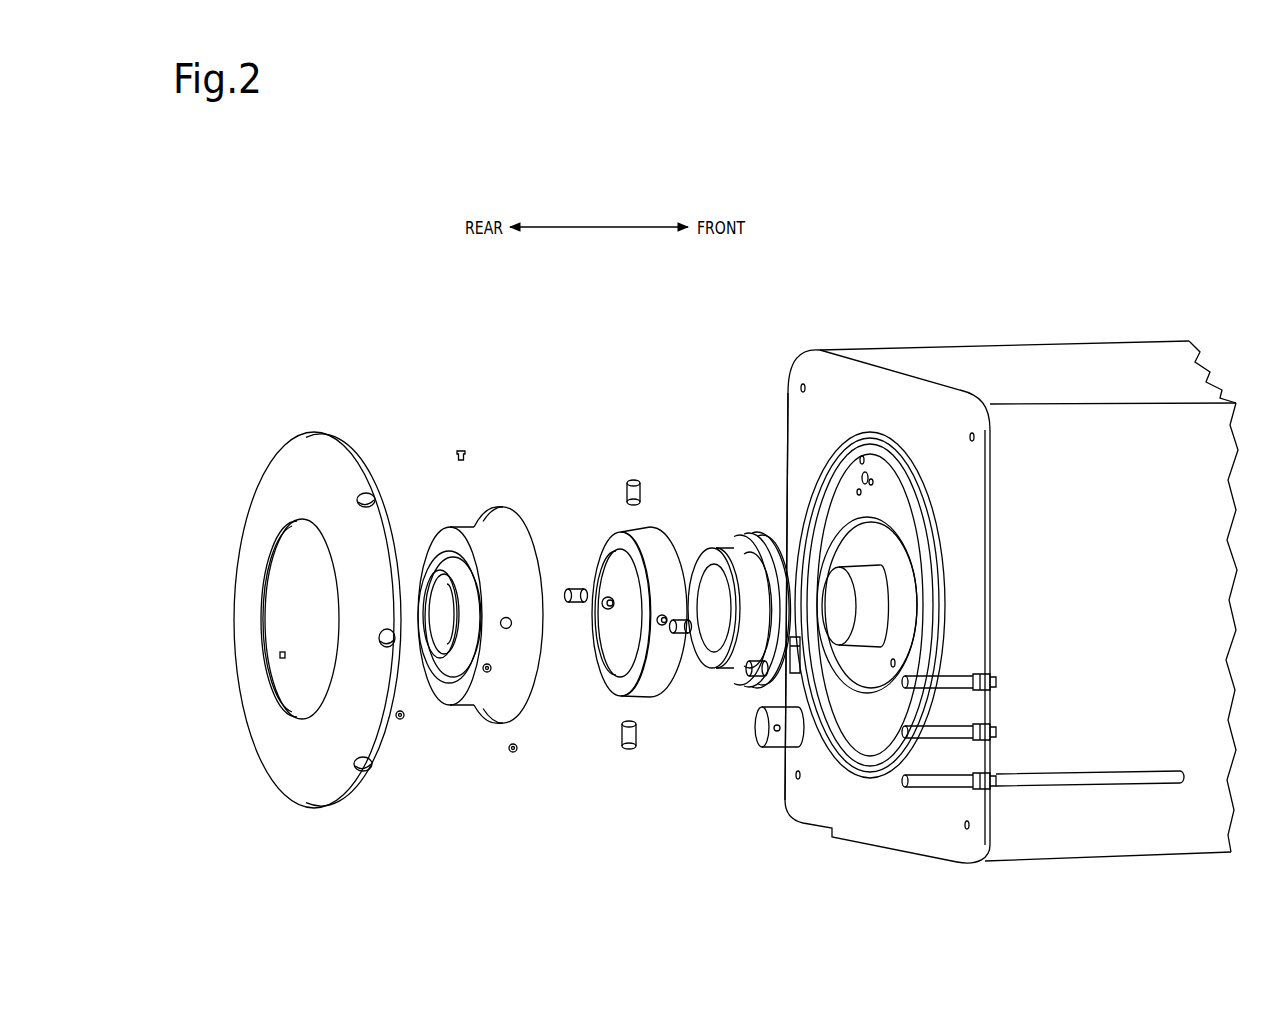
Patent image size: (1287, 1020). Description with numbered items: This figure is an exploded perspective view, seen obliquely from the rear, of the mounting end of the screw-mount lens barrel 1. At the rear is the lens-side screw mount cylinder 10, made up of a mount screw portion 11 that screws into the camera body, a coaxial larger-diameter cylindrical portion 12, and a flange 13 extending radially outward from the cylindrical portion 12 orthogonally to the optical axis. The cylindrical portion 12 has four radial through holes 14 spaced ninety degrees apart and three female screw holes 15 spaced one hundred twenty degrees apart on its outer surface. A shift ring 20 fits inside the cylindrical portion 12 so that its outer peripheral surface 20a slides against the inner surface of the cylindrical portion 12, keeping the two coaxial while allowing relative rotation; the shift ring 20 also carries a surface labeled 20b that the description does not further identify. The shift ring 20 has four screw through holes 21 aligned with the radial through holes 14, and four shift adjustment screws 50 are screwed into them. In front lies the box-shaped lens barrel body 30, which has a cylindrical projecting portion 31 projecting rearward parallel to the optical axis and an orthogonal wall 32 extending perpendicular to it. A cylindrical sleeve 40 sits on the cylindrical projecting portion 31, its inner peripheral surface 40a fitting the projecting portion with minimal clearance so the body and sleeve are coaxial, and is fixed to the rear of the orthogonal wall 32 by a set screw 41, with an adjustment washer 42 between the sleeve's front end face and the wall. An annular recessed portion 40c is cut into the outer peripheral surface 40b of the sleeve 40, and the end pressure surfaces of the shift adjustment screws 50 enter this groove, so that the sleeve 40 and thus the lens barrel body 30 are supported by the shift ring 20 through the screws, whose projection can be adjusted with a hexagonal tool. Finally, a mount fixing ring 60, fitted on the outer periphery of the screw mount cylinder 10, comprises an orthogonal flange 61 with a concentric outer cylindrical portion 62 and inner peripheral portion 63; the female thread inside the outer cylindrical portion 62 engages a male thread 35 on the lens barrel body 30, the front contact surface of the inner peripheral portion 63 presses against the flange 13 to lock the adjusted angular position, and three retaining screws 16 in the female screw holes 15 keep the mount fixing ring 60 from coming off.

The screw-mount lens barrel 1 is at (697, 530).
The lens-side screw mount cylinder 10 is at (503, 611).
The mount screw portion 11 is at (449, 657).
The cylindrical portion 12 is at (443, 573).
The flange 13 is at (508, 585).
The radial through holes 14 is at (552, 687).
The female screw holes 15 is at (526, 722).
The retaining screws 16 is at (466, 599).
The shift ring 20 is at (623, 617).
The outer peripheral surface 20a is at (660, 565).
The rear face of adjustment ring 20b is at (598, 585).
The screw through holes 21 is at (635, 629).
The lens barrel body 30 is at (993, 573).
The cylindrical projecting portion 31 is at (880, 582).
The orthogonal wall 32 is at (768, 576).
The male thread 35 is at (870, 531).
The cylindrical sleeve 40 is at (737, 614).
The inner peripheral surface 40a is at (707, 586).
The outer peripheral surface 40b is at (738, 578).
The annular recessed portion 40c is at (760, 564).
The set screw 41 is at (760, 712).
The adjustment washer 42 is at (877, 554).
The shift adjustment screws 50 is at (626, 615).
The mount fixing ring 60 is at (279, 591).
The orthogonal flange 61 is at (285, 620).
The outer cylindrical portion 62 is at (353, 590).
The inner peripheral portion 63 is at (248, 619).